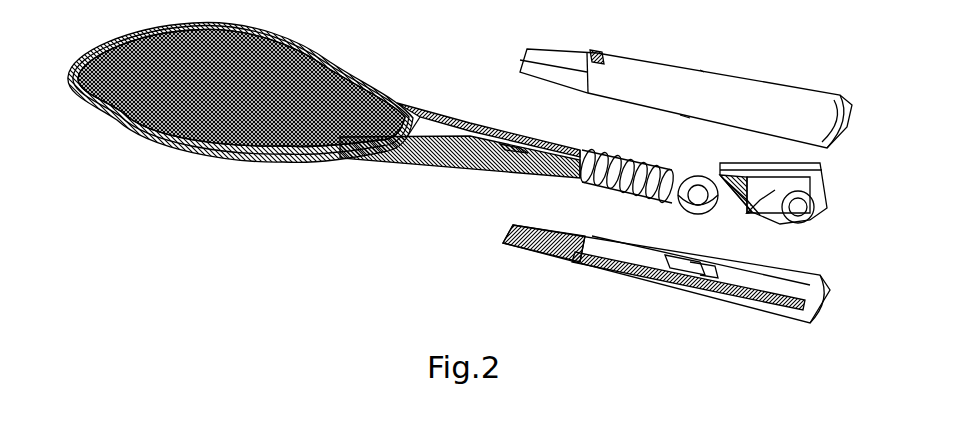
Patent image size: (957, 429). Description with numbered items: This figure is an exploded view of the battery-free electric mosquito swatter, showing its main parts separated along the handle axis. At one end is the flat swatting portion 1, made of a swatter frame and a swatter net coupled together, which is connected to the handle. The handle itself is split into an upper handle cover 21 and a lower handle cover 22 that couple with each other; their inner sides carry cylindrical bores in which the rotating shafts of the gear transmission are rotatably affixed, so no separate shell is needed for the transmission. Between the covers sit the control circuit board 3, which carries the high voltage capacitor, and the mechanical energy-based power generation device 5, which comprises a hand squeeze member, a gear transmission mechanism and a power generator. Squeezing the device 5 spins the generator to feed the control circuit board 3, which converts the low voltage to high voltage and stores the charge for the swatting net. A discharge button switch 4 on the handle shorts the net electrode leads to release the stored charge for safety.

The flat swatting portion 1 is at (337, 54).
The control circuit board 3 is at (620, 157).
The discharge button switch 4 is at (597, 57).
The mechanical energy-based power generation device 5 is at (813, 223).
The upper handle cover 21 is at (710, 82).
The lower handle cover 22 is at (607, 273).